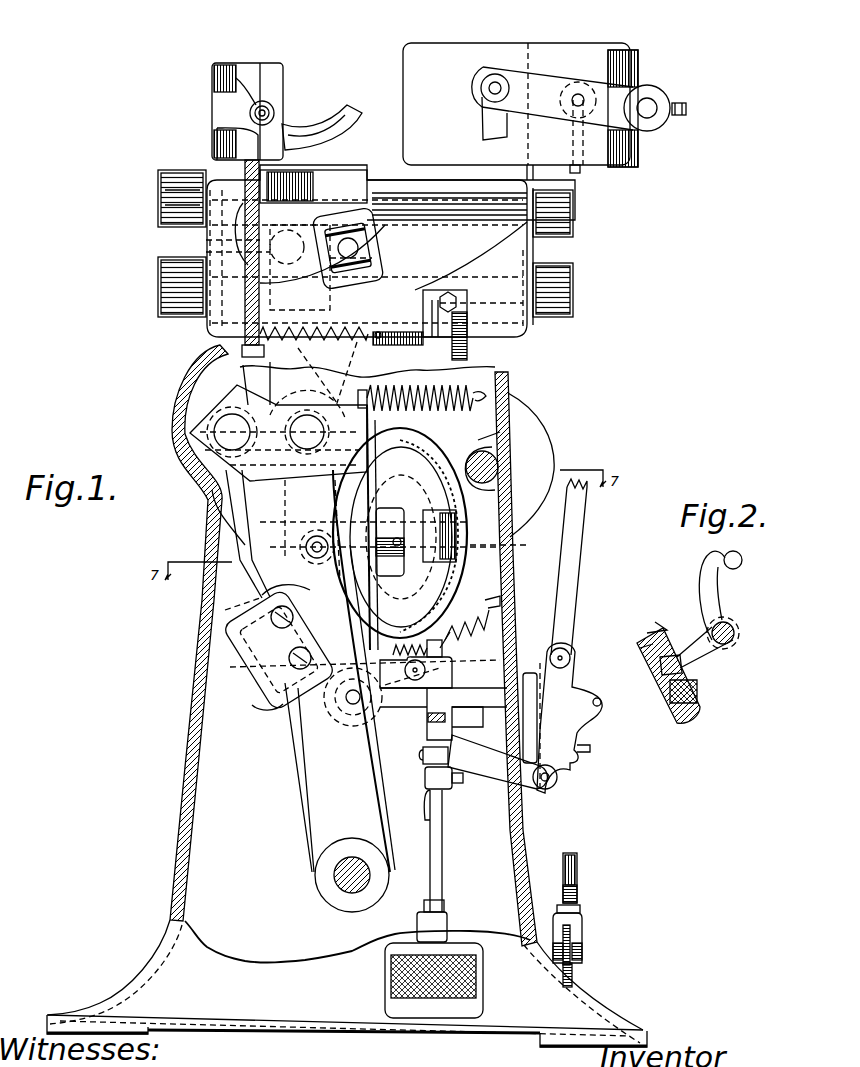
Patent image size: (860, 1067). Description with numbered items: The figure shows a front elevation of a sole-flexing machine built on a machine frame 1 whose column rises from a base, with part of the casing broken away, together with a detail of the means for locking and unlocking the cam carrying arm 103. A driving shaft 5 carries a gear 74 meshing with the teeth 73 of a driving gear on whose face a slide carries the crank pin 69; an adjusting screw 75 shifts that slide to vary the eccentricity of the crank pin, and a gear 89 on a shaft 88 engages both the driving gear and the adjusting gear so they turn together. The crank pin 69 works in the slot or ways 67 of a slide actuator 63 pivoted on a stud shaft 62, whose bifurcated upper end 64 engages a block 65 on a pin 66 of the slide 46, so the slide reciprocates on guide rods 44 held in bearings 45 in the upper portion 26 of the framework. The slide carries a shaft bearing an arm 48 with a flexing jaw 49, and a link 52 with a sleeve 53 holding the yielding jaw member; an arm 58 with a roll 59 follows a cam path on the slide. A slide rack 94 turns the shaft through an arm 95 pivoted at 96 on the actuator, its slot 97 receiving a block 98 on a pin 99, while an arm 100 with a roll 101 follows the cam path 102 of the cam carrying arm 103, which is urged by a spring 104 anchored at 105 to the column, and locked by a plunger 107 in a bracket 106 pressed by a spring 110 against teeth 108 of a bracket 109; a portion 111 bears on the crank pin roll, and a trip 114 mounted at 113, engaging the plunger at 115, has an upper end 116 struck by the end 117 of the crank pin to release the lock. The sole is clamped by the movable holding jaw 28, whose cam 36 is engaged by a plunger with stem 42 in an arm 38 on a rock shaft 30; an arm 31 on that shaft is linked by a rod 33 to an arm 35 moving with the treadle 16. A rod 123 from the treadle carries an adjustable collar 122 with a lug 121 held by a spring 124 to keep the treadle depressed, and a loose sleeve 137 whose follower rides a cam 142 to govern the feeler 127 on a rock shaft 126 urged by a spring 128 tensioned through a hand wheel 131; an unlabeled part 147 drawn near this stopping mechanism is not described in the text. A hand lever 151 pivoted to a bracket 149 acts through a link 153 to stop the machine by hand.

In FIG. 1, the machine frame 1 is at (522, 426).
In FIG. 1, the driving shaft 5 is at (325, 713).
In FIG. 1, the treadle 16 is at (455, 997).
In FIG. 1, the upper portion of the framework 26 is at (540, 245).
In FIG. 1, the movable sole holding jaw 28 is at (459, 56).
In FIG. 1, the rock shaft 30 is at (652, 108).
In FIG. 1, the arm 31 is at (639, 68).
In FIG. 1, the rod 33 is at (577, 875).
In FIG. 1, the arm 35 is at (570, 963).
In FIG. 1, the bevel or cam 36 is at (483, 124).
In FIG. 1, the arm 38 is at (545, 82).
In FIG. 1, the stem of the plunger 42 is at (496, 85).
In FIG. 1, the guide rods 44 is at (477, 212).
In FIG. 1, the bearings 45 is at (560, 263).
In FIG. 1, the slide 46 is at (346, 192).
In FIG. 1, the arm 48 is at (310, 168).
In FIG. 1, the flexing jaw 49 is at (268, 80).
In FIG. 1, the link 52 is at (240, 103).
In FIG. 1, the sleeve 53 is at (270, 112).
In FIG. 1, the arm 58 is at (241, 135).
In FIG. 1, the roll 59 is at (242, 173).
In FIG. 1, the stud shaft 62 is at (340, 887).
In FIG. 1, the slide actuator 63 is at (245, 370).
In FIG. 1, the bifurcated upper end 64 is at (215, 240).
In FIG. 1, the block 65 is at (160, 200).
In FIG. 1, the pin 66 is at (206, 251).
In FIG. 1, the slot or ways 67 is at (352, 570).
In FIG. 1, the crank pin 69 is at (300, 543).
In FIG. 1, the teeth of the driving gear 73 is at (465, 549).
In FIG. 1, the gear 74 is at (423, 752).
In FIG. 1, the adjusting screw 75 is at (390, 530).
In FIG. 1, the shaft 88 is at (502, 465).
In FIG. 1, the gear 89 is at (497, 441).
In FIG. 1, the slide rack 94 is at (230, 258).
In FIG. 1, the arm 95 is at (372, 378).
In FIG. 1, the pivotal mounting 96 is at (212, 490).
In FIG. 1, the slot 97 is at (380, 228).
In FIG. 1, the block 98 is at (375, 264).
In FIG. 1, the pin 99 is at (380, 245).
In FIG. 1, the arm 100 is at (186, 394).
In FIG. 1, the roll 101 is at (207, 428).
In FIG. 1, the cam path 102 is at (215, 445).
In FIG. 1, the cam carrying arm 103 is at (325, 798).
In FIG. 1, the spring 104 is at (500, 379).
In FIG. 1, the connection point 105 is at (480, 398).
In FIG. 1, the bracket 106 is at (260, 700).
In FIG. 2, the bracket 106 is at (688, 718).
In FIG. 1, the plunger 107 is at (235, 652).
In FIG. 2, the plunger 107 is at (653, 648).
In FIG. 1, the teeth 108 is at (237, 608).
In FIG. 1, the bracket 109 is at (175, 613).
In FIG. 2, the spring 110 is at (697, 692).
In FIG. 1, the portion of the cam carrying arm 111 is at (260, 522).
In FIG. 1, the mounting of the trip 113 is at (240, 601).
In FIG. 2, the mounting of the trip 113 is at (736, 635).
In FIG. 2, the trip 114 is at (707, 651).
In FIG. 2, the engagement point 115 is at (682, 655).
In FIG. 2, the upper end of the trip 116 is at (708, 556).
In FIG. 2, the end of the crank pin 117 is at (742, 562).
In FIG. 1, the lug 121 is at (425, 772).
In FIG. 1, the adjustable collar 122 is at (441, 790).
In FIG. 1, the rod 123 is at (437, 855).
In FIG. 1, the spring 124 is at (472, 622).
In FIG. 1, the rock shaft 126 is at (218, 325).
In FIG. 1, the feeler 127 is at (333, 121).
In FIG. 1, the spring 128 is at (352, 342).
In FIG. 1, the hand wheel 131 is at (465, 338).
In FIG. 1, the sleeve 137 is at (440, 657).
In FIG. 1, the cam 142 is at (530, 545).
In FIG. 1, the slide 147 is at (440, 688).
In FIG. 1, the bracket 149 is at (555, 681).
In FIG. 1, the hand lever 151 is at (576, 565).
In FIG. 1, the link 153 is at (528, 788).